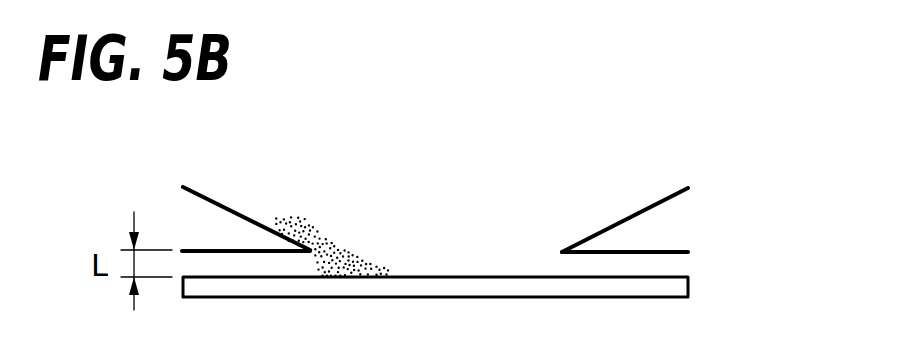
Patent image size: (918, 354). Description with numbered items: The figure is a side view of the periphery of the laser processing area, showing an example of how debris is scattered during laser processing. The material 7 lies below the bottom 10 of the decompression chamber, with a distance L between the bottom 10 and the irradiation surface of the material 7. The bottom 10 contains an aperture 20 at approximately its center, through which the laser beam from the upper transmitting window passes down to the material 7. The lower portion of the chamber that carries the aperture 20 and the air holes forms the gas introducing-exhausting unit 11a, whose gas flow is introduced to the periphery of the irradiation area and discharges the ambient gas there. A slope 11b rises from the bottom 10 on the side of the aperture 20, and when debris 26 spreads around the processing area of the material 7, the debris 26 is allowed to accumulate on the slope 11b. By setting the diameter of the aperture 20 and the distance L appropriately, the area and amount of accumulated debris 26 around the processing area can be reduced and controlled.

The material 7 is at (688, 282).
The bottom of the decompression chamber 10 is at (657, 256).
The gas introducing-exhausting unit 11a is at (668, 213).
The slope 11b is at (273, 227).
The aperture 20 is at (513, 258).
The debris 26 is at (312, 235).